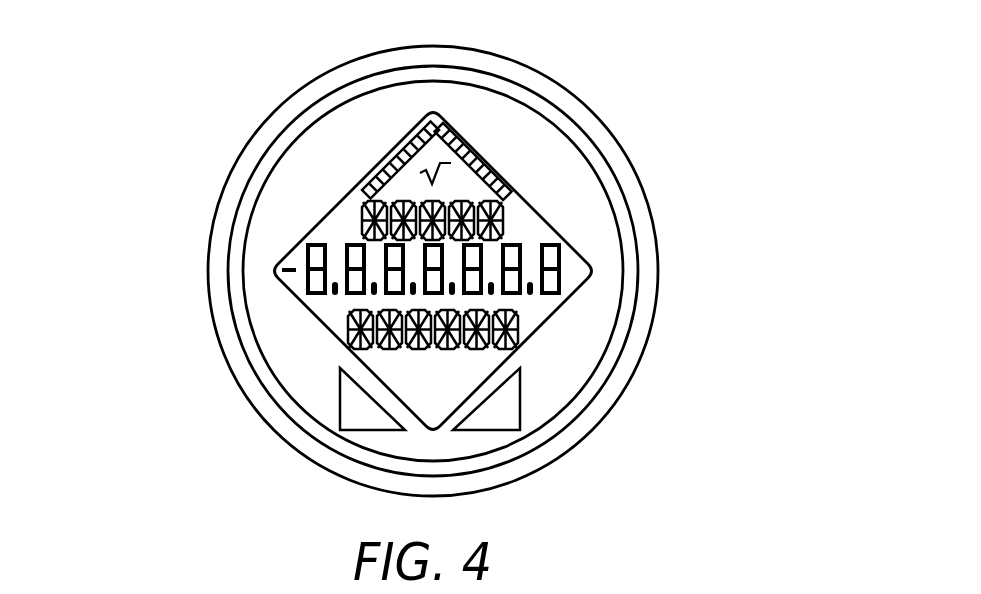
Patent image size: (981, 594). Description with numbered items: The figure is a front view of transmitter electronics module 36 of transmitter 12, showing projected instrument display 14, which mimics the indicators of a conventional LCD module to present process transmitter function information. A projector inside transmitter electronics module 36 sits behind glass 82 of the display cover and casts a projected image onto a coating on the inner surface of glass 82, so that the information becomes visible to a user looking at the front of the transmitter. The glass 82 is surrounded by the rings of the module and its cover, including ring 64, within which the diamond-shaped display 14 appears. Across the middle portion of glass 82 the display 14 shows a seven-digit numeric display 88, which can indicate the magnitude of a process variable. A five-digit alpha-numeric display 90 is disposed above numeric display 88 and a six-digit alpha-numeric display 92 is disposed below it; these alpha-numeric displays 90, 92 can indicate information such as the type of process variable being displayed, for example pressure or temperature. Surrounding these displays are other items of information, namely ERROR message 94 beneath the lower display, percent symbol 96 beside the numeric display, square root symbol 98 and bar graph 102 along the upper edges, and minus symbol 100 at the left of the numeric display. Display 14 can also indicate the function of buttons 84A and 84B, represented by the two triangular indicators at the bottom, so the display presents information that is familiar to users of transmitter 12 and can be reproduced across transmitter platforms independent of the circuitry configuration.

The transmitter 12 is at (150, 96).
The transmitter electronics module 36 is at (550, 66).
The cover window ring 64 is at (618, 158).
The glass 82 is at (622, 212).
The projected instrument display 14 is at (538, 178).
The bar graph 102 is at (388, 133).
The square root symbol 98 is at (437, 177).
The percent symbol 96 is at (573, 256).
The five-digit alpha-numeric display 90 is at (362, 219).
The seven-digit numeric display 88 is at (292, 310).
The minus symbol 100 is at (292, 278).
The six-digit alpha-numeric display 92 is at (343, 328).
The ERROR message 94 is at (418, 387).
The button 84A is at (348, 398).
The button 84B is at (510, 408).